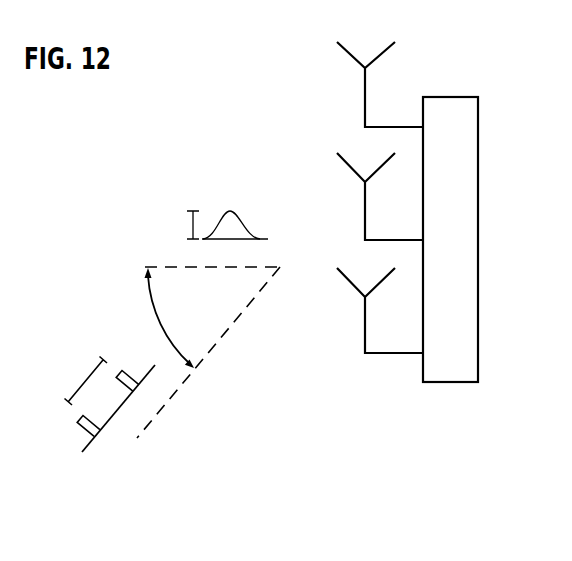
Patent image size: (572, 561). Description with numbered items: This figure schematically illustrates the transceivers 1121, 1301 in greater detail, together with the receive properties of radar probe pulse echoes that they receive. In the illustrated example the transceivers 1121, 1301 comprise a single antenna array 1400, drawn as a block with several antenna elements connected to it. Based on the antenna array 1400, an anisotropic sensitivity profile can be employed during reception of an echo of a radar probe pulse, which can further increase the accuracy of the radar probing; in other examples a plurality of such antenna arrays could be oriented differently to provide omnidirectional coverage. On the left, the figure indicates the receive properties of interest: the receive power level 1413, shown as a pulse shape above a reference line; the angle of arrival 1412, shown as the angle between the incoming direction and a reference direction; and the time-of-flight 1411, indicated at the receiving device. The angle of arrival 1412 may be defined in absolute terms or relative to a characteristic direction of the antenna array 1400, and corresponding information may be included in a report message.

The antenna array 1400 is at (407, 282).
The transceiver 1121 is at (407, 282).
The transceiver 1301 is at (407, 212).
The time-of-flight 1411 is at (102, 467).
The angle of arrival 1412 is at (241, 349).
The receive power level 1413 is at (242, 191).